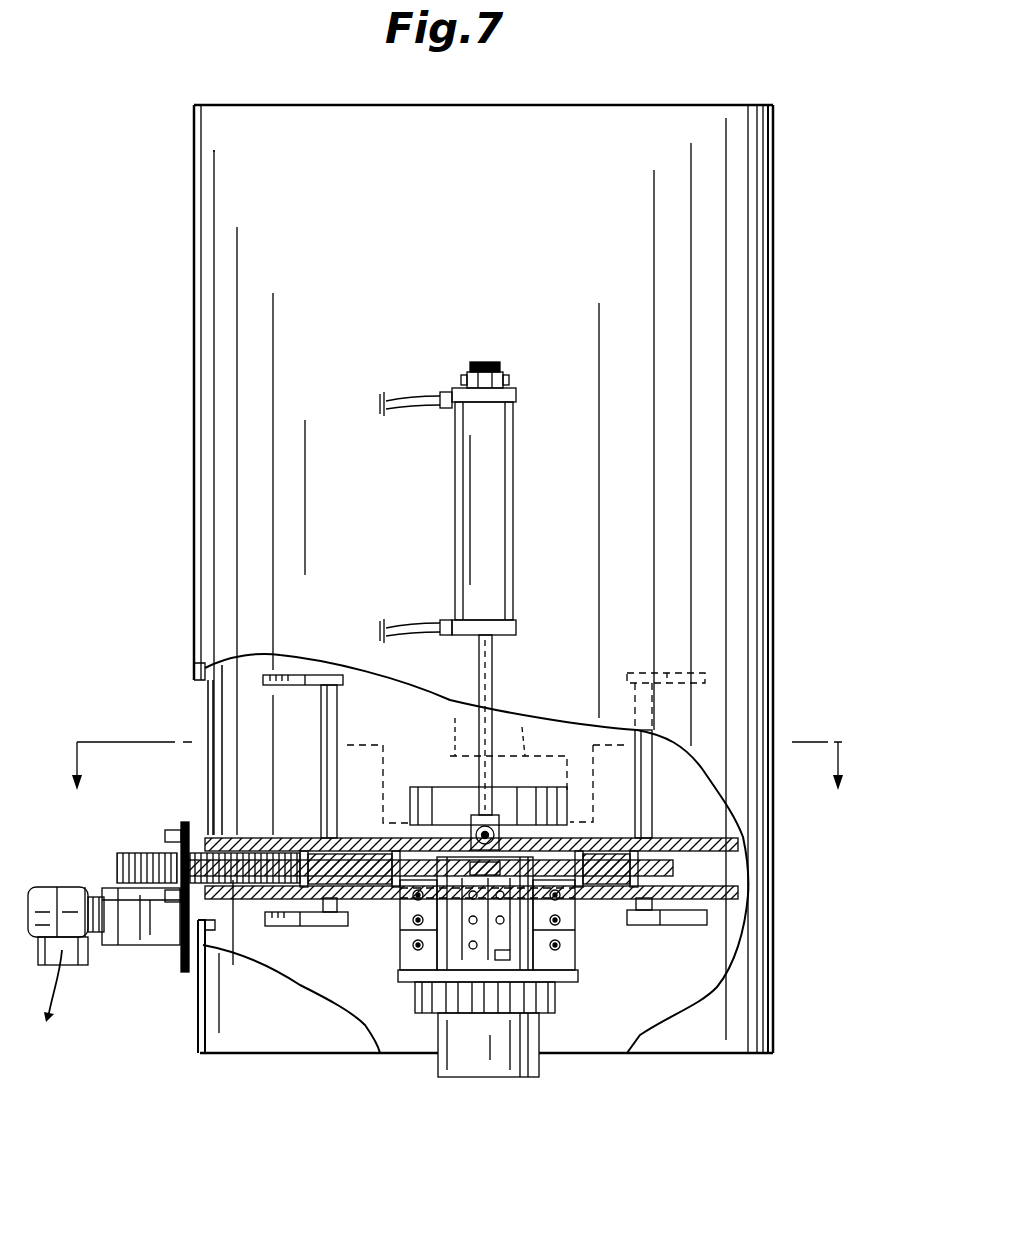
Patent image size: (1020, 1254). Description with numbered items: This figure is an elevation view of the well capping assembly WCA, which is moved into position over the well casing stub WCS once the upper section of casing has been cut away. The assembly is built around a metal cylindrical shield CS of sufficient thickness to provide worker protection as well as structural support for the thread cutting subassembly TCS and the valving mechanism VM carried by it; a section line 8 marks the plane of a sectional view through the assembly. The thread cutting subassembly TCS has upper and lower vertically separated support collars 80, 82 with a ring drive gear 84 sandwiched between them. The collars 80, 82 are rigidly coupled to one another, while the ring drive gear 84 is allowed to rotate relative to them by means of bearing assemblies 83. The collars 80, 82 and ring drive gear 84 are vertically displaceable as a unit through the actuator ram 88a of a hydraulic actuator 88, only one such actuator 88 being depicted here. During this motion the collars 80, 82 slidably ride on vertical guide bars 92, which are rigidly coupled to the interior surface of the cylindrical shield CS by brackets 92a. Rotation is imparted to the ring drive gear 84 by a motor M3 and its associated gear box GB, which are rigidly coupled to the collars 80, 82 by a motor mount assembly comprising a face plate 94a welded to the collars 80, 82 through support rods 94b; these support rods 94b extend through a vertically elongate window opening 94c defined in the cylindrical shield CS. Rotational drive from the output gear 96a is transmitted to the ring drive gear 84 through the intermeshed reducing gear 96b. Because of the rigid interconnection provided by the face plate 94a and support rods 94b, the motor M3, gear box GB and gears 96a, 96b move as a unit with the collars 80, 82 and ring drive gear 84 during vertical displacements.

The well capping assembly WCA is at (798, 408).
The cylindrical shield CS is at (317, 197).
The section line 8- 8 is at (456, 754).
The hydraulic actuator 88 is at (470, 488).
The actuator ram 88a is at (493, 668).
The valving mechanism VM is at (525, 724).
The bracket 92a is at (288, 686).
The vertical guide bar 92 is at (338, 708).
The window opening 94c is at (208, 697).
The upper support collar 80 is at (712, 838).
The lower support collar 82 is at (720, 898).
The ring drive gear 84 is at (670, 868).
The bearing assembly 83 is at (378, 848).
The output gear 96a is at (133, 855).
The reducing gear 96b is at (205, 838).
The face plate 94a is at (180, 962).
The support rod 94b is at (230, 836).
The motor M3 is at (52, 893).
The gear box GB is at (133, 935).
The thread cutting subassembly TCS is at (372, 966).
The well casing stub WCS is at (478, 1068).